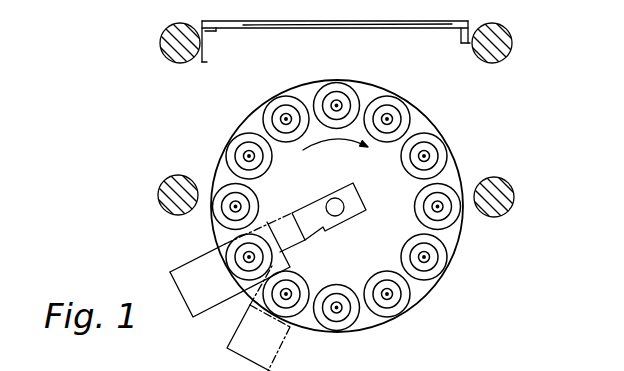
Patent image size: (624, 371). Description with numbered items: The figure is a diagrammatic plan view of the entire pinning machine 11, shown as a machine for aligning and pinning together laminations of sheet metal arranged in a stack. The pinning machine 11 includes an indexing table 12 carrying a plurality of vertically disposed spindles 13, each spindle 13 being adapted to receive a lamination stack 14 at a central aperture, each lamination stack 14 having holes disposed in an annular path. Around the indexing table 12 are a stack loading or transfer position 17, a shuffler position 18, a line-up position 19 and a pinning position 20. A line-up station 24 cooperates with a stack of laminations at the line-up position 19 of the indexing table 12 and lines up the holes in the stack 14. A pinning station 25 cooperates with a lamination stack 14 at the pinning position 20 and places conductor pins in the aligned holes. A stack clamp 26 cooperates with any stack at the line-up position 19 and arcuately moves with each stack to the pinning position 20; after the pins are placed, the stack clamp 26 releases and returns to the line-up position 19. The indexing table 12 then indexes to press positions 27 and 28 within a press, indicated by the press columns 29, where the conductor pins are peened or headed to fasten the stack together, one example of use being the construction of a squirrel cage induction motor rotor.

The pinning machine 11 is at (460, 87).
The indexing table 12 is at (423, 128).
The spindle 13 is at (386, 293).
The lamination stack 14 is at (440, 212).
The stack loading or transfer position 17 is at (401, 315).
The shuffler position 18 is at (347, 332).
The line-up position 19 is at (297, 327).
The pinning position 20 is at (227, 249).
The line-up station 24 is at (235, 333).
The pinning station 25 is at (185, 263).
The stack clamp 26 is at (280, 223).
The press position 27 is at (281, 108).
The press position 28 is at (392, 108).
The press column 29 is at (498, 62).